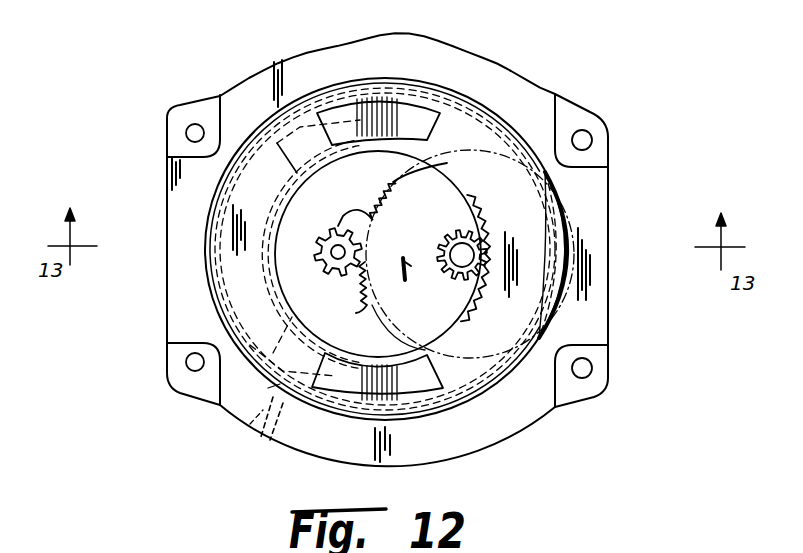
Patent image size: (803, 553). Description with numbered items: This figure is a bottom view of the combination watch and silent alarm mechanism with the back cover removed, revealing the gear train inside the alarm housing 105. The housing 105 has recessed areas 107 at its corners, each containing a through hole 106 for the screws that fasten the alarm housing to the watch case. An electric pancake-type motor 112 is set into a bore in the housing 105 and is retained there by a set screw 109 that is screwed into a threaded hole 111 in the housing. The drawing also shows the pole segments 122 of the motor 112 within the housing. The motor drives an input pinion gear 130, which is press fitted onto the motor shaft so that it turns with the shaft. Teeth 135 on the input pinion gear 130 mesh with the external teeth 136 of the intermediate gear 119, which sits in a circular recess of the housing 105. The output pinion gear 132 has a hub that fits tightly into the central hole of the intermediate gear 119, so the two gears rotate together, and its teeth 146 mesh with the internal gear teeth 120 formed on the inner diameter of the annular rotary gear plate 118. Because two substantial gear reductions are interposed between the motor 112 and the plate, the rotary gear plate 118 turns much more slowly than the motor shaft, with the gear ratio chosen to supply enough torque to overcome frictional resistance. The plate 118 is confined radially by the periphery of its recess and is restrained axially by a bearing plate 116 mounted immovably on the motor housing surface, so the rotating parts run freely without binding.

The housing 105 is at (404, 34).
The through holes 106 is at (588, 139).
The recessed areas 107 is at (200, 108).
The set screw 109 is at (266, 442).
The threaded hole 111 is at (250, 424).
The motor 112 is at (268, 388).
The bearing plate 116 is at (215, 290).
The annular rotary gear plate 118 is at (527, 212).
The intermediate gear 119 is at (433, 207).
The internal gear teeth 120 is at (477, 219).
The stator pole piece 122 is at (410, 117).
The input pinion gear 130 is at (335, 200).
The output pinion gear 132 is at (460, 270).
The teeth 135 is at (375, 221).
The external teeth 136 is at (346, 294).
The teeth 146 is at (419, 279).